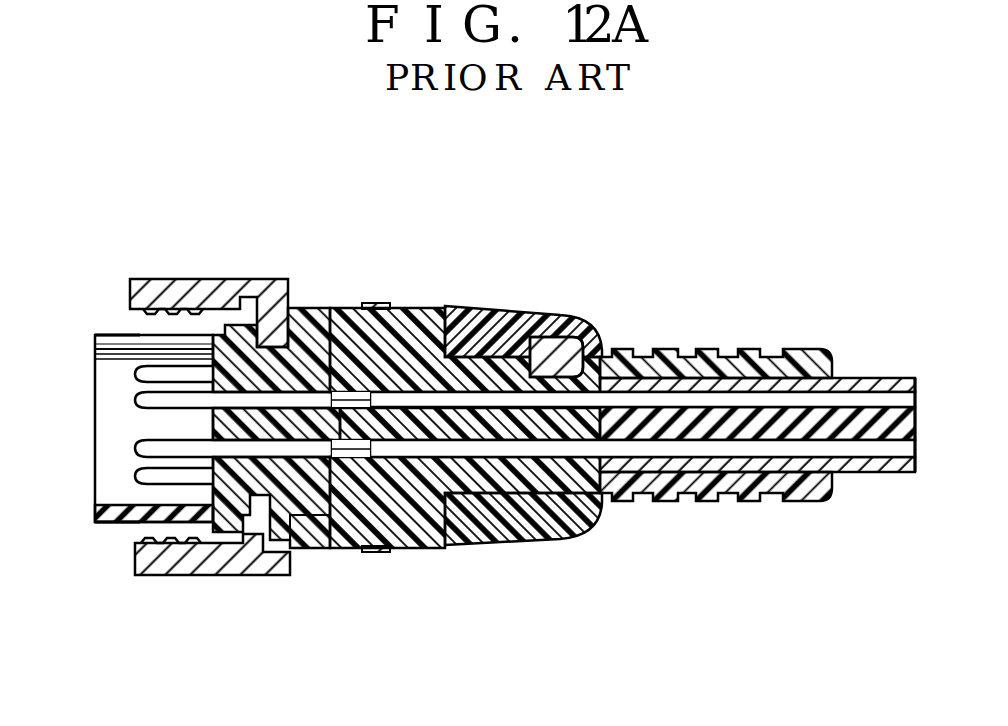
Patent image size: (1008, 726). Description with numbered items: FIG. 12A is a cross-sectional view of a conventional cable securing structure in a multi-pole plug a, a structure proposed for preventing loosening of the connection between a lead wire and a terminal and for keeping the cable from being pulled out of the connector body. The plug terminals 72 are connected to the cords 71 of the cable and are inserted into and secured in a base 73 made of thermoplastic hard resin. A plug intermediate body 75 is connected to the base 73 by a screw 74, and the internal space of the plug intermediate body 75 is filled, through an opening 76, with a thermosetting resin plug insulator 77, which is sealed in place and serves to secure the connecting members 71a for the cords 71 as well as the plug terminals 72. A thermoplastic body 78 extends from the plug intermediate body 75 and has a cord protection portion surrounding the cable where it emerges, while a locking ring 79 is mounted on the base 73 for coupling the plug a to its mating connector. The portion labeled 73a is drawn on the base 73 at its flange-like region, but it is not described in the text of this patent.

The cords 71 is at (443, 390).
The connecting members 71a is at (358, 340).
The plug terminals 72 is at (170, 396).
The base 73 is at (105, 395).
The housing flange 73a is at (118, 334).
The screw 74 is at (302, 308).
The plug intermediate body 75 is at (327, 548).
The opening 76 is at (583, 356).
The plug insulator 77 is at (397, 540).
The thermoplastic body 78 is at (707, 502).
The locking ring 79 is at (193, 577).
The multi-pole plug a is at (528, 282).